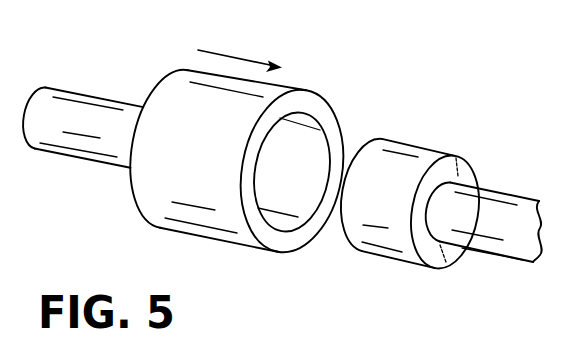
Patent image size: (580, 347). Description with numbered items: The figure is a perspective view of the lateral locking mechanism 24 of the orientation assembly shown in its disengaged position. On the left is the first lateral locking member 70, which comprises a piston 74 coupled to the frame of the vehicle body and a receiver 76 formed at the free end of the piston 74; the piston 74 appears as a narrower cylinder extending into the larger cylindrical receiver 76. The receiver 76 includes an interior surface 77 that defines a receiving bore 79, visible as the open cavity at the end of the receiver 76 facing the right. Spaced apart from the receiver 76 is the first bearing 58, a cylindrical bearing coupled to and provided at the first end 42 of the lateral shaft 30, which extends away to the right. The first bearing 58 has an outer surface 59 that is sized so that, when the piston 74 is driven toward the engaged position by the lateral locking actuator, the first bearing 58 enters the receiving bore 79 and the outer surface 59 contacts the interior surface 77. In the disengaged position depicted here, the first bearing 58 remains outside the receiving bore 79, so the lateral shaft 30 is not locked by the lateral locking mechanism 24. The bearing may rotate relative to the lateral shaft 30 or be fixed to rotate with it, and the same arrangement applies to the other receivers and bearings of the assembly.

The lateral locking mechanism 24 is at (157, 65).
The lateral shaft 30 is at (505, 193).
The first end 42 is at (425, 178).
The first bearing 58 is at (380, 233).
The outer surface 59 is at (375, 165).
The first lateral locking member 70 is at (299, 90).
The piston 74 is at (82, 93).
The receiver 76 is at (222, 244).
The interior surface 77 is at (296, 208).
The receiving bore 79 is at (287, 177).